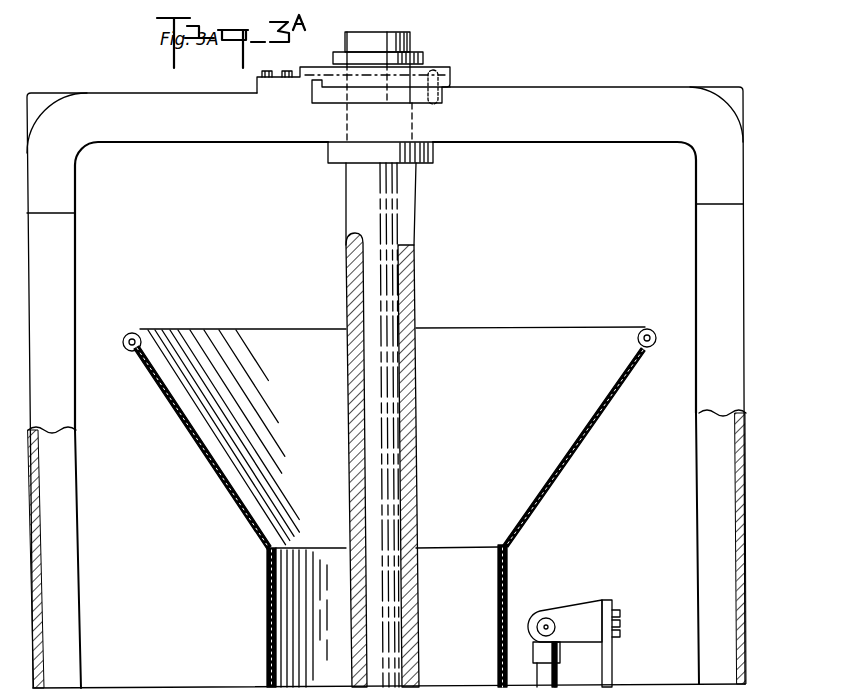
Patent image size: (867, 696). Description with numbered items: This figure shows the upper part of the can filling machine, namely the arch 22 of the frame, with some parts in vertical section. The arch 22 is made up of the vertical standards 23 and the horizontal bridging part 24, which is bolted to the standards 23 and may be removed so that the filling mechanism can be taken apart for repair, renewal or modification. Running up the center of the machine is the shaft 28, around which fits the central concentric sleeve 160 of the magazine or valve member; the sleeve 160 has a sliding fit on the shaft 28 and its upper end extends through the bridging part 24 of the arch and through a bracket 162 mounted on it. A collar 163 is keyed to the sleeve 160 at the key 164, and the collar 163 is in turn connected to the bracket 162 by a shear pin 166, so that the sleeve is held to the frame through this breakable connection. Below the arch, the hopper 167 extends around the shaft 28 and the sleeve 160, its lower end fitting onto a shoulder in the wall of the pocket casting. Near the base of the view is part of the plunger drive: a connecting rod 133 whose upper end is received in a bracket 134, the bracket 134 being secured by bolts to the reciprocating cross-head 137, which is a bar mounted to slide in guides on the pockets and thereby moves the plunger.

The arch 22 is at (386, 378).
The vertical standards 23 is at (387, 526).
The horizontal bridging part 24 is at (385, 266).
The shaft 28 is at (367, 272).
The connecting rod 133 is at (557, 668).
The bracket 134 is at (571, 612).
The reciprocating cross-head 137 is at (614, 660).
The sleeve 160 is at (417, 393).
The bracket 162 is at (447, 70).
The collar 163 is at (320, 103).
The key 164 is at (348, 118).
The shear pin 166 is at (440, 100).
The hopper 167 is at (573, 425).